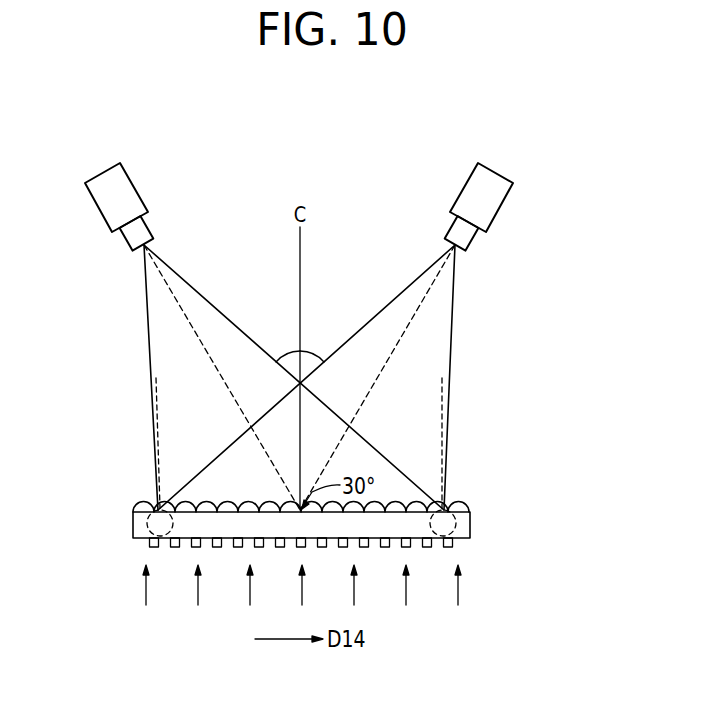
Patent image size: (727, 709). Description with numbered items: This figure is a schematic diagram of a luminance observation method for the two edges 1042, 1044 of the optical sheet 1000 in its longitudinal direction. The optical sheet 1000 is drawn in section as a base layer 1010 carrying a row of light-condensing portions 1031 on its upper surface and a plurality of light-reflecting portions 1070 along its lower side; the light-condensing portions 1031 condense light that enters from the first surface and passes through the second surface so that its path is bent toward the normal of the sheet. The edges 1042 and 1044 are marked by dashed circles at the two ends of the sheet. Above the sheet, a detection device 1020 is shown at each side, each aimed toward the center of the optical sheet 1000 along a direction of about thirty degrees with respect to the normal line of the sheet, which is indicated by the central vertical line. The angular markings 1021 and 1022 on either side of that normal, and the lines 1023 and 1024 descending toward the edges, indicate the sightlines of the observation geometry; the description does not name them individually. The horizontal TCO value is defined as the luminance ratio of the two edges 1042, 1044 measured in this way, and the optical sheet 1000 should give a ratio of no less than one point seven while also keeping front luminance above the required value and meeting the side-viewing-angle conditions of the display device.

The optical sheet 1000 is at (343, 527).
The base layer 1010 is at (465, 529).
The detection device 1020 is at (512, 183).
The first imaging angle 1021 is at (287, 347).
The second imaging angle 1022 is at (313, 347).
The left viewing region 1023 is at (153, 377).
The right viewing region 1024 is at (450, 373).
The light-condensing portions 1031 is at (465, 503).
The edge 1042 is at (147, 524).
The edge 1044 is at (460, 519).
The light-reflecting portions 1070 is at (460, 541).